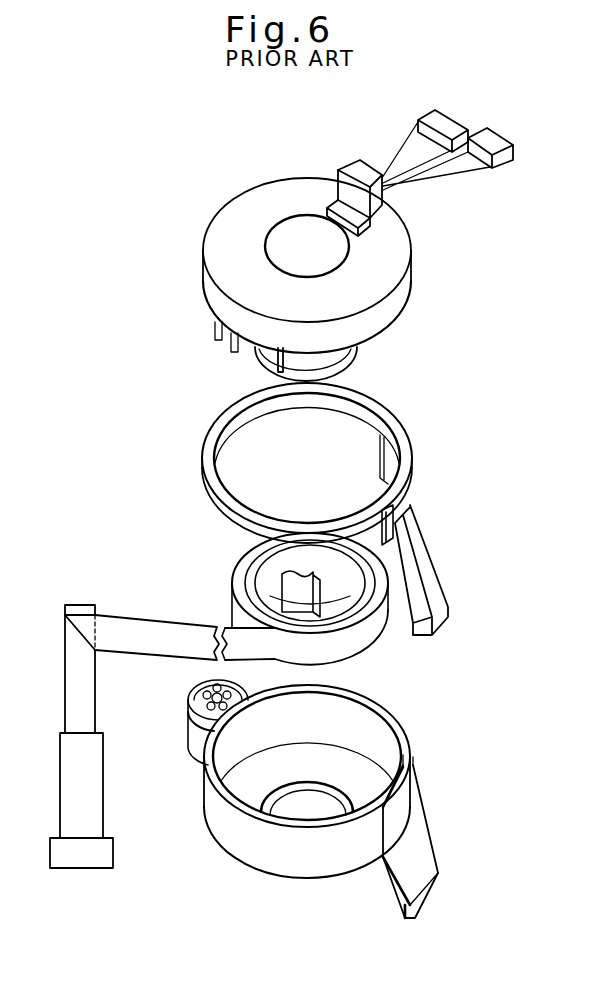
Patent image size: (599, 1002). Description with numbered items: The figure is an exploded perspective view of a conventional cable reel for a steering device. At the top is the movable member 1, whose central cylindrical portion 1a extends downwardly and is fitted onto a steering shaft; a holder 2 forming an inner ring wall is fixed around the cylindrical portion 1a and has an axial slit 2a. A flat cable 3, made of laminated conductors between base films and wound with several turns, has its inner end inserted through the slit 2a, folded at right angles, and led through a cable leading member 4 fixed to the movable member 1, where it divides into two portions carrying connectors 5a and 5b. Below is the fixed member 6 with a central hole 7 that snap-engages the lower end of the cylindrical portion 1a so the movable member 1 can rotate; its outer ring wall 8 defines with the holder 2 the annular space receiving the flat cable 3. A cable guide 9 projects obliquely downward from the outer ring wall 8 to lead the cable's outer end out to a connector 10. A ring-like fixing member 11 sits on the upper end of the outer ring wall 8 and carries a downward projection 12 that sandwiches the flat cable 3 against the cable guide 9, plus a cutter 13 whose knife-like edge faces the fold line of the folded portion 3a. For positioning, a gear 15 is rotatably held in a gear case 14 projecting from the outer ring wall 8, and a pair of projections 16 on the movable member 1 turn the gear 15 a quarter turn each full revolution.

The movable member 1 is at (413, 290).
The central cylindrical portion 1a is at (290, 227).
The holder 2 is at (333, 362).
The axial slit 2a is at (275, 358).
The flat cable 3 is at (173, 618).
The folded portion 3a is at (80, 620).
The cable leading member 4 is at (352, 170).
The connector 5a is at (443, 123).
The connector 5b is at (502, 157).
The fixed member 6 is at (412, 747).
The central hole 7 is at (302, 815).
The outer ring wall 8 is at (362, 715).
The cable guide 9 is at (422, 853).
The connector 10 is at (90, 857).
The ring-like fixing member 11 is at (410, 457).
The downward projection 12 is at (435, 585).
The cutter 13 is at (393, 513).
The gear case 14 is at (187, 713).
The gear 15 is at (197, 732).
The projections 16 is at (215, 335).